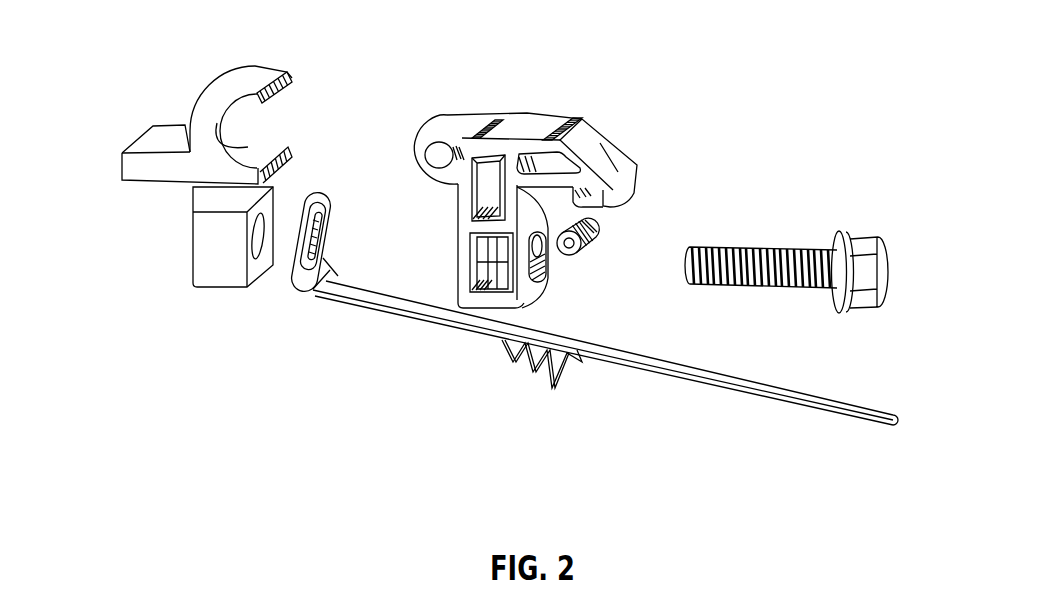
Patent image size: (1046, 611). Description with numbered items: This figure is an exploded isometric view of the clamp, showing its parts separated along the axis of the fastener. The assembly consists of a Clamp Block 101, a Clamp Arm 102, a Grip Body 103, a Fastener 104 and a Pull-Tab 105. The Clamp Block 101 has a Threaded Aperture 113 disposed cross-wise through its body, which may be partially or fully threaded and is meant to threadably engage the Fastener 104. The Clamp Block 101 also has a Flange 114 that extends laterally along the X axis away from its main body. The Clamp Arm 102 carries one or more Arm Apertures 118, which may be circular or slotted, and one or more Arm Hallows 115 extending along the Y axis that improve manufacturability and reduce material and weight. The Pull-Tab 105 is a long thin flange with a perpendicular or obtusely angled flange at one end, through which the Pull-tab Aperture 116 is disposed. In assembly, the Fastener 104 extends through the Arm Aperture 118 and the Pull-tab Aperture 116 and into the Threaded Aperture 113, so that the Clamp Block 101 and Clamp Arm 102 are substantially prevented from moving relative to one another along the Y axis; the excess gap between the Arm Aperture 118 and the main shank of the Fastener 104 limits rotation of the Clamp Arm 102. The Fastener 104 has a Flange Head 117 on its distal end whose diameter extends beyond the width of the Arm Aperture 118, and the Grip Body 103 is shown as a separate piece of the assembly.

The Clamp Block 101 is at (206, 302).
The Clamp Arm 102 is at (553, 106).
The Grip Body 103 is at (607, 226).
The Fastener 104 is at (693, 288).
The Pull-Tab 105 is at (445, 333).
The Threaded Aperture 113 is at (248, 242).
The Flange 114 is at (162, 140).
The Arm Hallows 115 is at (483, 172).
The Pull-tab Aperture 116 is at (317, 262).
The Flange Head 117 is at (840, 322).
The Arm Aperture 118 is at (537, 260).